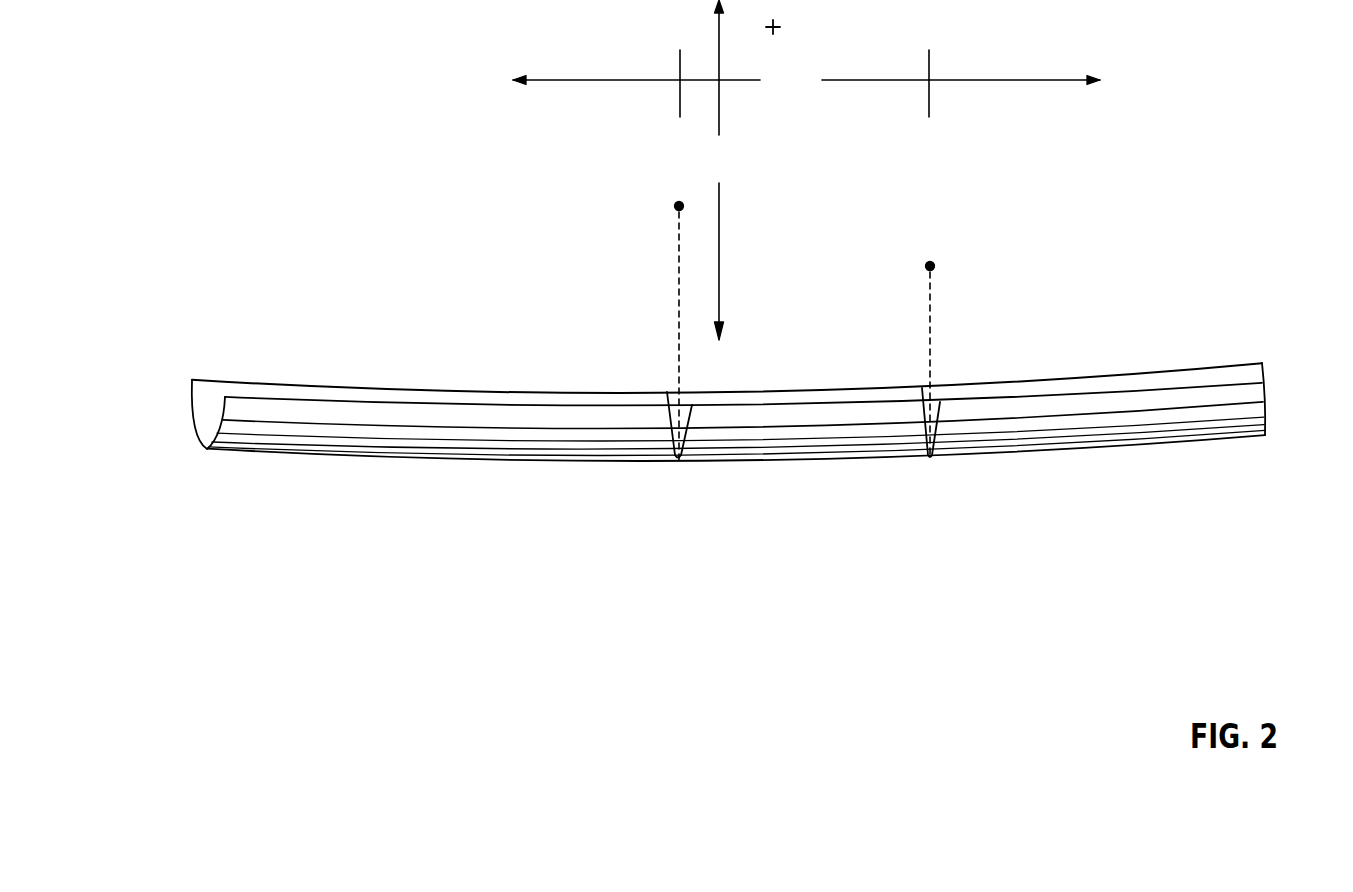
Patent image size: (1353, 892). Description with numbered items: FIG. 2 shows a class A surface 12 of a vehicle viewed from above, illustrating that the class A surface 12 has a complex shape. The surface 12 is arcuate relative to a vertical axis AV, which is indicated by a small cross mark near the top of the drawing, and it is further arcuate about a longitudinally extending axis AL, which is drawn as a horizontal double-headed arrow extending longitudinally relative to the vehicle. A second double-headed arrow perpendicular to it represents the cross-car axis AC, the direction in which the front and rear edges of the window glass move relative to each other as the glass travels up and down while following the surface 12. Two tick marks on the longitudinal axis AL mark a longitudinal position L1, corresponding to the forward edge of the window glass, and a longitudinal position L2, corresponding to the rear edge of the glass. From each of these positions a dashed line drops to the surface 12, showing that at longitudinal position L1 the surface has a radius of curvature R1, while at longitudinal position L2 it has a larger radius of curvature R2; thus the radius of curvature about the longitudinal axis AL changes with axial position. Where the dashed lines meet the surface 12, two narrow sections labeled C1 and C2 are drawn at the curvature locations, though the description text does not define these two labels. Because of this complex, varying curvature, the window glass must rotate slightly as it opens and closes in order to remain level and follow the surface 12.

The class A surface 12 is at (393, 456).
The first cutout C1 is at (930, 460).
The second cutout C2 is at (679, 462).
The radius of curvature R1 is at (930, 341).
The radius of curvature R2 is at (679, 314).
The longitudinal position L1 is at (927, 103).
The longitudinal position L2 is at (680, 103).
The longitudinal axis AL is at (806, 89).
The cross-car axis AC is at (726, 170).
The vertical axis AV is at (780, 30).